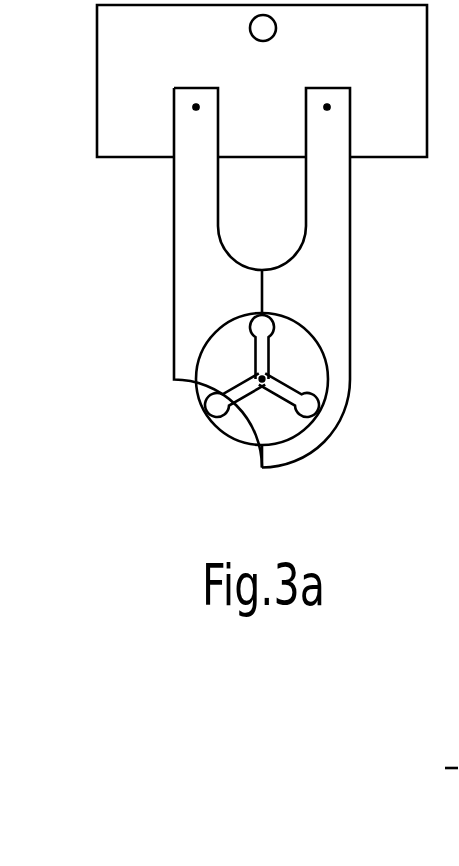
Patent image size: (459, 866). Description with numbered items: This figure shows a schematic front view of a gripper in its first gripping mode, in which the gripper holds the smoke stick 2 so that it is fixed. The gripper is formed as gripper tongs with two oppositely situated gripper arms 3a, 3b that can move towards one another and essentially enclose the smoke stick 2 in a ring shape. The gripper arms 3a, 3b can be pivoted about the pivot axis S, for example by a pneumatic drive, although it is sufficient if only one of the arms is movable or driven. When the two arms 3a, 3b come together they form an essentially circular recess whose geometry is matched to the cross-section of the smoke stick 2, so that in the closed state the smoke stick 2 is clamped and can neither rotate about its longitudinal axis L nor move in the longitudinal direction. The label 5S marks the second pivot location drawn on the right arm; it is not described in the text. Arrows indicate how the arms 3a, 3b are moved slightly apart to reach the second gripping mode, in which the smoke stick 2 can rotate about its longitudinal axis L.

The pivot axis S is at (196, 107).
The second sensor 5S is at (327, 107).
The gripper arm 3a is at (175, 327).
The gripper arm 3b is at (346, 322).
The smoke stick 2 is at (313, 405).
The longitudinal axis L is at (262, 383).